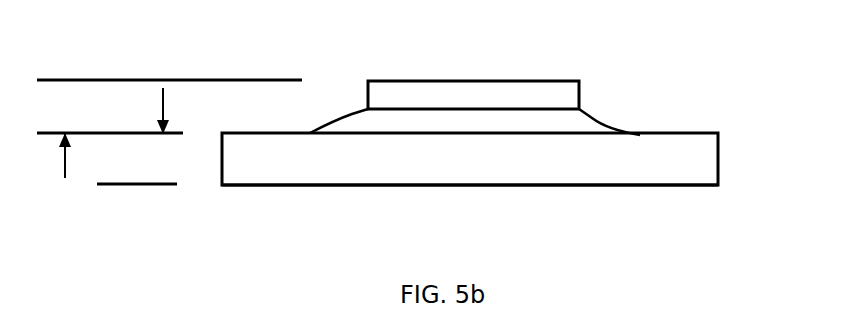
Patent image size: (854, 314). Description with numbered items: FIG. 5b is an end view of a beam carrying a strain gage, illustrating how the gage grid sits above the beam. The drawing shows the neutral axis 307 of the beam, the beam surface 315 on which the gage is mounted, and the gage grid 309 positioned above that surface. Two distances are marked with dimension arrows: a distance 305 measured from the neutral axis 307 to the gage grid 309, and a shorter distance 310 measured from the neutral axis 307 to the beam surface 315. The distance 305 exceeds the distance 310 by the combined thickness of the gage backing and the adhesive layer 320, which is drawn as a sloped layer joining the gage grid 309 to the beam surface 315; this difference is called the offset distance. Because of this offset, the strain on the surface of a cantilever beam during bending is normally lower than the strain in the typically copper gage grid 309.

The distance 305 is at (65, 79).
The gage grid 309 is at (439, 80).
The adhesive layer 320 is at (603, 119).
The neutral axis 307 is at (684, 132).
The distance 310 is at (163, 185).
The beam surface 315 is at (283, 187).